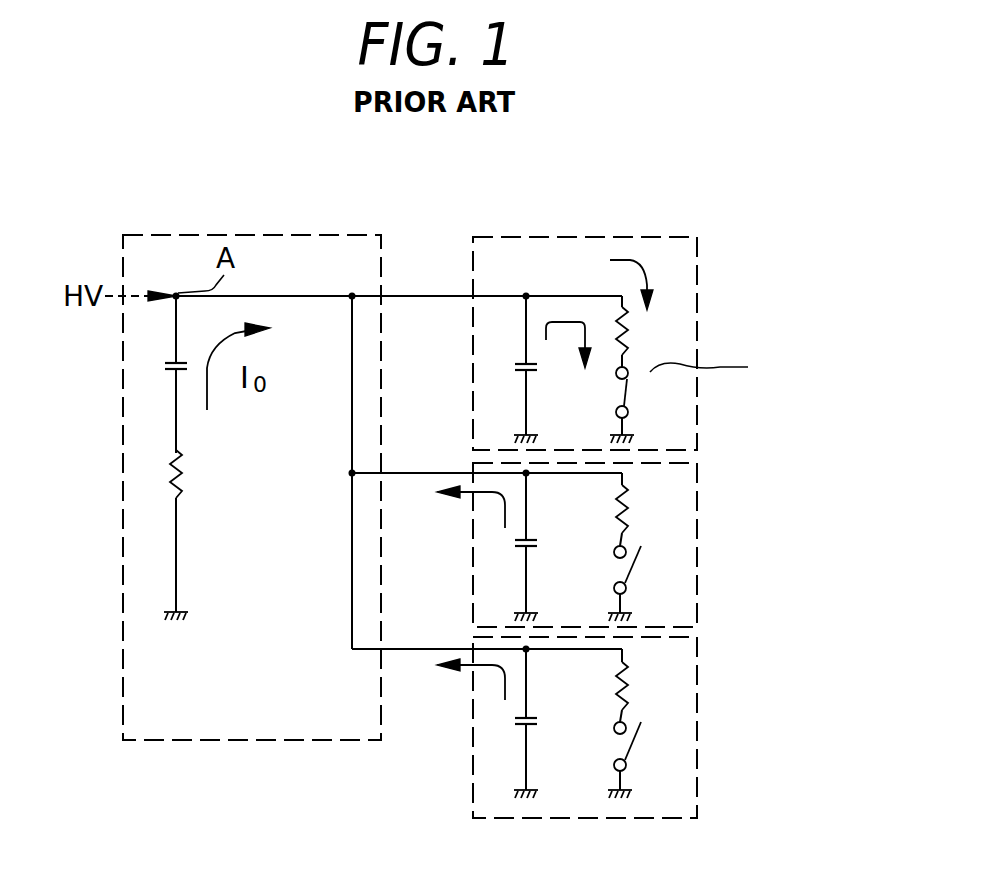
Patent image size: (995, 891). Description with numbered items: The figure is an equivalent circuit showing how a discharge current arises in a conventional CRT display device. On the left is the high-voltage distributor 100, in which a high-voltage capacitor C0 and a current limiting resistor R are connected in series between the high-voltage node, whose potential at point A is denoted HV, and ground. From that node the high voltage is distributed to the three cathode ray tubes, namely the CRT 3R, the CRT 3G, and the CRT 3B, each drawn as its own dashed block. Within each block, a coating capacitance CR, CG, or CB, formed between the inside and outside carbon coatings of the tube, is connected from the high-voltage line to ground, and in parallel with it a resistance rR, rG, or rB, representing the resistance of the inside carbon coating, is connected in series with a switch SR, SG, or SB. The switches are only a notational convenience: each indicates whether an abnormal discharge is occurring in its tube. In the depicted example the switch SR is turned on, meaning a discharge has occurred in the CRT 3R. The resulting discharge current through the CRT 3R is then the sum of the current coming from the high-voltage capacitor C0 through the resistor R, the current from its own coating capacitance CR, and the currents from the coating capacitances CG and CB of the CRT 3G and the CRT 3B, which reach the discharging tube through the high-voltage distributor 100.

The high-voltage distributor 100 is at (252, 532).
The CRT 3R is at (695, 343).
The CRT 3G is at (607, 545).
The CRT 3B is at (612, 727).
The high-voltage capacitor C0 is at (162, 374).
The current limiting resistor R is at (163, 535).
The coating capacitance CR is at (510, 369).
The coating capacitance CG is at (509, 547).
The coating capacitance CB is at (509, 723).
The resistance of inside carbon coating rR is at (644, 325).
The resistance of inside carbon coating rG is at (643, 505).
The resistance of inside carbon coating rB is at (642, 679).
The switch SR is at (645, 399).
The switch SG is at (697, 540).
The switch SB is at (697, 715).